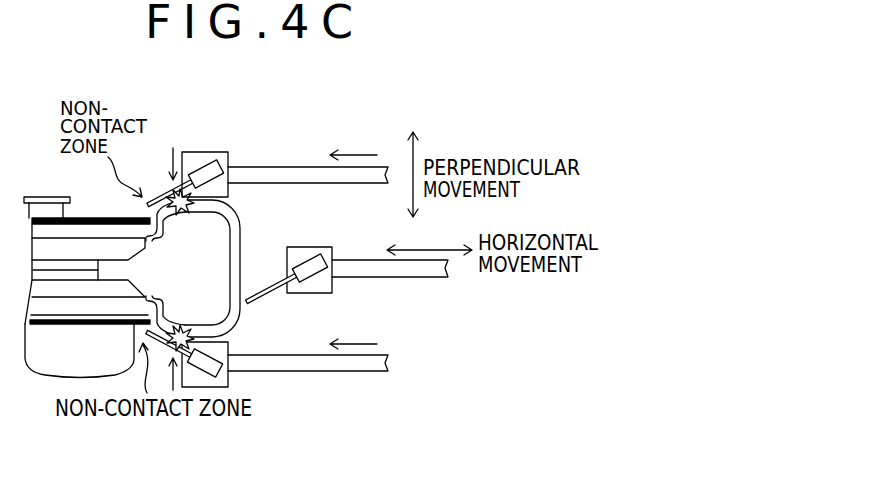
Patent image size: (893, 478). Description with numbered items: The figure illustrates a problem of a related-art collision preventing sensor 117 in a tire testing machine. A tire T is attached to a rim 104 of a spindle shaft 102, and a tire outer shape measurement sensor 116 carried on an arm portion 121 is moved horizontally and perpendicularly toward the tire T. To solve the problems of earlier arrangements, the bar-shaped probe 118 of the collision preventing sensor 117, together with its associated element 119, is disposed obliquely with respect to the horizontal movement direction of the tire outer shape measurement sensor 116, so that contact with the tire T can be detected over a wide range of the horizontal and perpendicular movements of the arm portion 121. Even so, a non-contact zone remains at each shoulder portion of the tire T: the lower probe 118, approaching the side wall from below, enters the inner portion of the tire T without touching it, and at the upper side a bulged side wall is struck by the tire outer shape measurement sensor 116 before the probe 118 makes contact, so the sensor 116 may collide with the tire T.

The spindle shaft 102 is at (43, 155).
The rim 104 is at (80, 217).
The tire outer shape measurement sensor 116 is at (228, 163).
The collision preventing sensor 117 is at (184, 130).
The probe 118 is at (152, 198).
The roller 119 is at (203, 167).
The arm portion 121 is at (357, 186).
The tire T is at (236, 217).